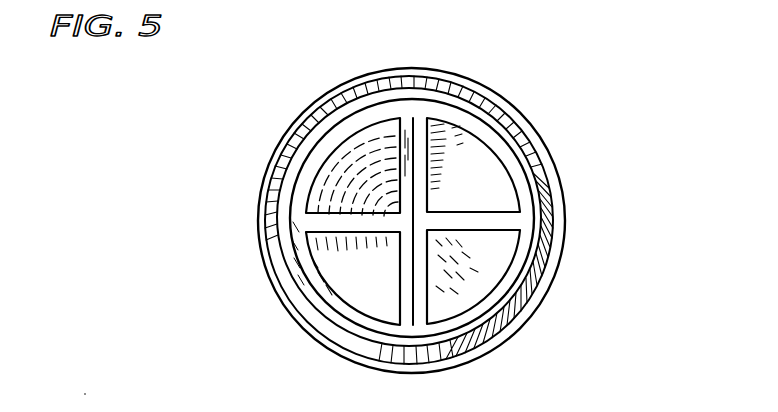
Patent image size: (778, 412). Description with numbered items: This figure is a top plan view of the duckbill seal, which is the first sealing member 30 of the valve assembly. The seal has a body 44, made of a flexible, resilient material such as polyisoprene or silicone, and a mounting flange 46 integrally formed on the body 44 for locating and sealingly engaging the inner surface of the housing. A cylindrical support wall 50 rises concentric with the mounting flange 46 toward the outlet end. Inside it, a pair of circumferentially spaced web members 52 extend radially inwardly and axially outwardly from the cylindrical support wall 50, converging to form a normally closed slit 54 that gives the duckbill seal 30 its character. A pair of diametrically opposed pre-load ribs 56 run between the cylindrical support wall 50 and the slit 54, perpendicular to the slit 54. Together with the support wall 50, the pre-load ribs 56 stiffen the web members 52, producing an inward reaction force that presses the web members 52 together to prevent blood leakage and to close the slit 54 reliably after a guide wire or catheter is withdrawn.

The first sealing member 30 is at (504, 89).
The body 44 is at (527, 120).
The mounting flange 46 is at (547, 285).
The cylindrical support wall 50 is at (328, 137).
The web members 52 is at (327, 200).
The slit 54 is at (415, 290).
The pre-load ribs 56 is at (363, 225).